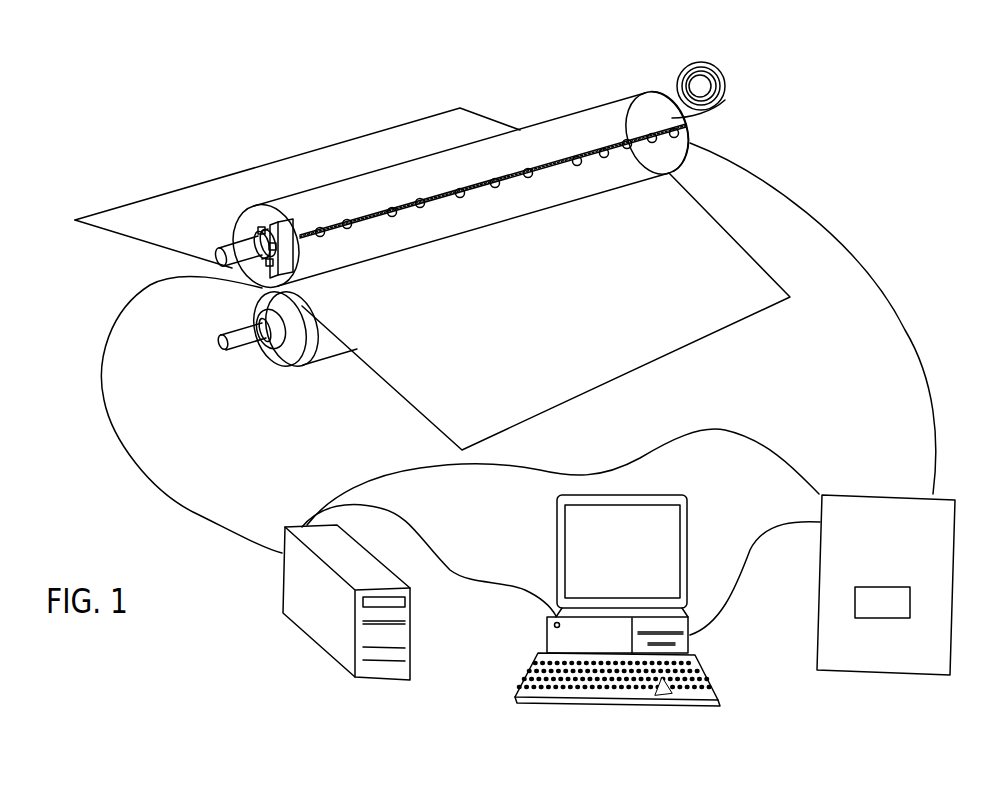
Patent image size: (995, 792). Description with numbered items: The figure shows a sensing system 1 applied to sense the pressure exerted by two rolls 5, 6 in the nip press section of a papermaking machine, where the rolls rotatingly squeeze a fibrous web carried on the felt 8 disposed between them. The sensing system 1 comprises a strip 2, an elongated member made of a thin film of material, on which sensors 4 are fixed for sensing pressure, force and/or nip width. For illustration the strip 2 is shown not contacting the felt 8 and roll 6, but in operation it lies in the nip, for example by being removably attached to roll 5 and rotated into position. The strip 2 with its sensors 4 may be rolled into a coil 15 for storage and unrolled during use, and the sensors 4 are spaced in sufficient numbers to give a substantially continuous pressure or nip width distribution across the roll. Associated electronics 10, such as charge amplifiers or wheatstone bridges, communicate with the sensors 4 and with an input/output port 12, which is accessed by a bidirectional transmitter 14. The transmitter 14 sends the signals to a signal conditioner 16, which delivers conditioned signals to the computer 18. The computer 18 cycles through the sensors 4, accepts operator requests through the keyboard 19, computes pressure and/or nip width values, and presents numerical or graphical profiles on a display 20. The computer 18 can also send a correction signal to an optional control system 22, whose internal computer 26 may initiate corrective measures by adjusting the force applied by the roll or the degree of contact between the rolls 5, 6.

The sensing system 1 is at (294, 84).
The strip 2 is at (543, 158).
The sensors 4 is at (627, 138).
The roll 5 is at (620, 100).
The roll 6 is at (332, 352).
The felt 8 is at (606, 376).
The electronics 10 is at (248, 284).
The input/output port 12 is at (293, 217).
The bidirectional transmitter 14 is at (248, 222).
The coil 15 is at (723, 115).
The signal conditioner 16 is at (283, 597).
The computer 18 is at (624, 587).
The keyboard 19 is at (705, 681).
The display 20 is at (632, 497).
The control system 22 is at (886, 571).
The internal computer 26 is at (910, 602).